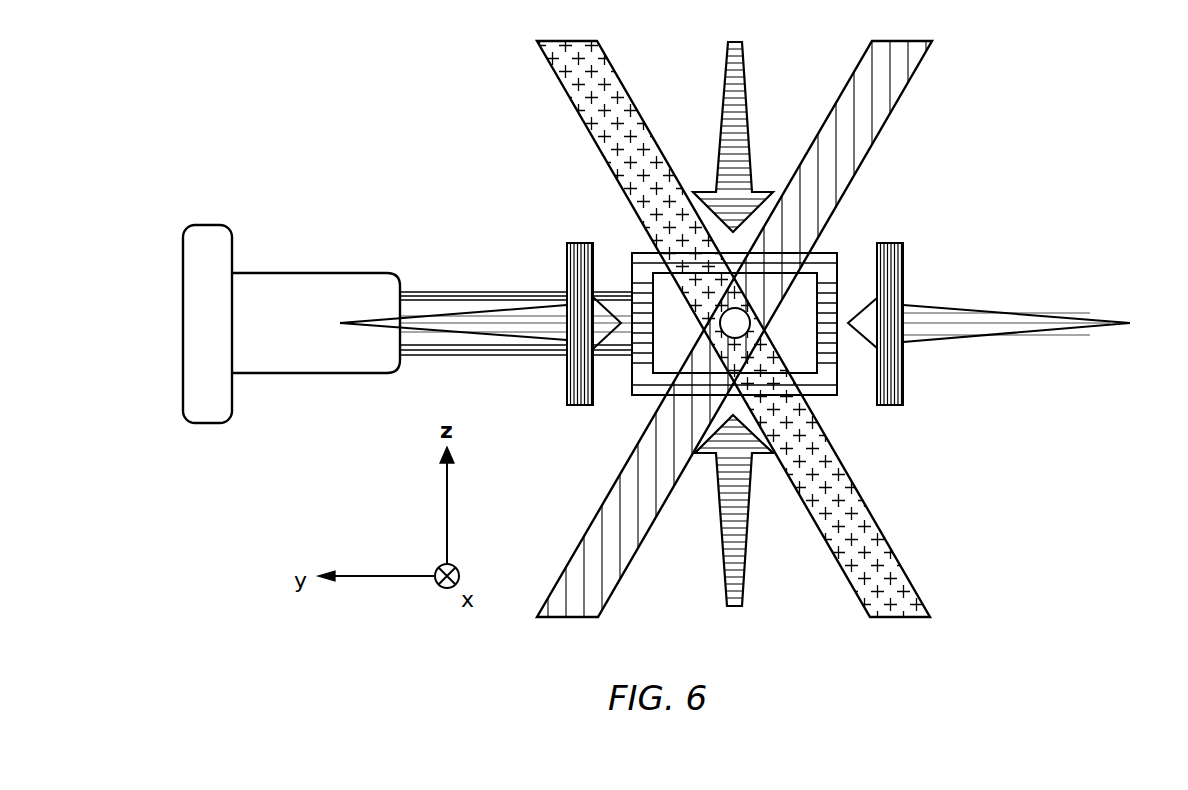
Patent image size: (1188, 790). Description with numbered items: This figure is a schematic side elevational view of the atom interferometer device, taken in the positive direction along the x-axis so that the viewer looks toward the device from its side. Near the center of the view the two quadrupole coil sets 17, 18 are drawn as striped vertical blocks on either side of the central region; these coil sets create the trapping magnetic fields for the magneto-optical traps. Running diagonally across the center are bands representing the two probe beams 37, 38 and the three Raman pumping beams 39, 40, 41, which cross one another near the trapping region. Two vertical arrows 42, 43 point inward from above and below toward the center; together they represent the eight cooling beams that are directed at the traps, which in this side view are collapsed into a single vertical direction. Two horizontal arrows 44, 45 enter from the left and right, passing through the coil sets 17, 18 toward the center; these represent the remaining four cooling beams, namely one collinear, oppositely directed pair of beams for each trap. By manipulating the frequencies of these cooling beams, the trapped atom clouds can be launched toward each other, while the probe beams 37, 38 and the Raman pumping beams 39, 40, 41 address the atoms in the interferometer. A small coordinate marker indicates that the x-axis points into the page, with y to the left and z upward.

The quadrupole coil set 17 is at (783, 324).
The quadrupole coil set 18 is at (903, 273).
The probe beam 37 is at (772, 329).
The probe beam 38 is at (907, 80).
The Raman pumping beam 39 is at (788, 329).
The Raman pumping beam 40 is at (788, 329).
The Raman pumping beam 41 is at (907, 573).
The vertical arrow 42 is at (735, 42).
The vertical arrow 43 is at (733, 606).
The horizontal arrow 44 is at (477, 313).
The horizontal arrow 45 is at (1040, 315).